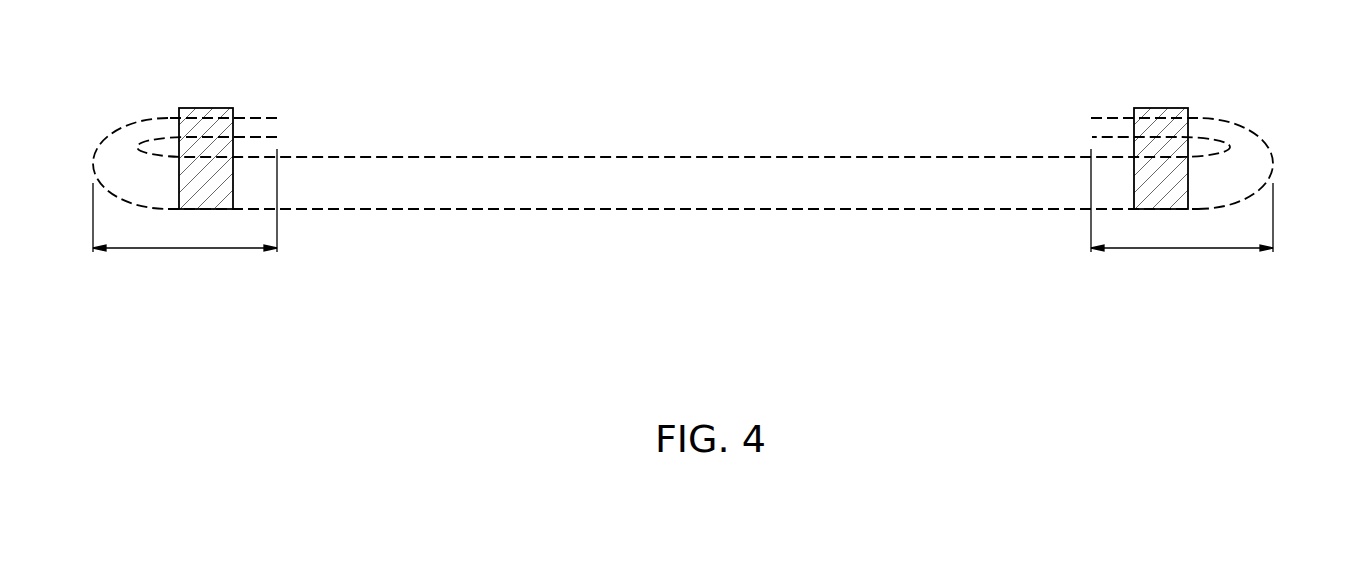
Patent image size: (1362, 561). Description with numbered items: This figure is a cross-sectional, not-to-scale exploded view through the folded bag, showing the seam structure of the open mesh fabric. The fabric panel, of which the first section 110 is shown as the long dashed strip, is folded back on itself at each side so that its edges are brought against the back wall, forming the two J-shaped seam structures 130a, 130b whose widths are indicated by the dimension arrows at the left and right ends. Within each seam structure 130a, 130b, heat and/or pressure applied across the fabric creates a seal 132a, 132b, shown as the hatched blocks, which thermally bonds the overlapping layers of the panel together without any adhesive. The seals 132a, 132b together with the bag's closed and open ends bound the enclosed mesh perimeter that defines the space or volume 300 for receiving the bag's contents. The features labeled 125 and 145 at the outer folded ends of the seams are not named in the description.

The first section 110 is at (445, 200).
The space or volume 300 is at (708, 198).
The first loop end 125 is at (93, 163).
The second loop end 145 is at (1273, 163).
The seal 132a is at (205, 113).
The seal 132b is at (1162, 113).
The seam structure 130a is at (182, 249).
The seam structure 130b is at (1185, 249).